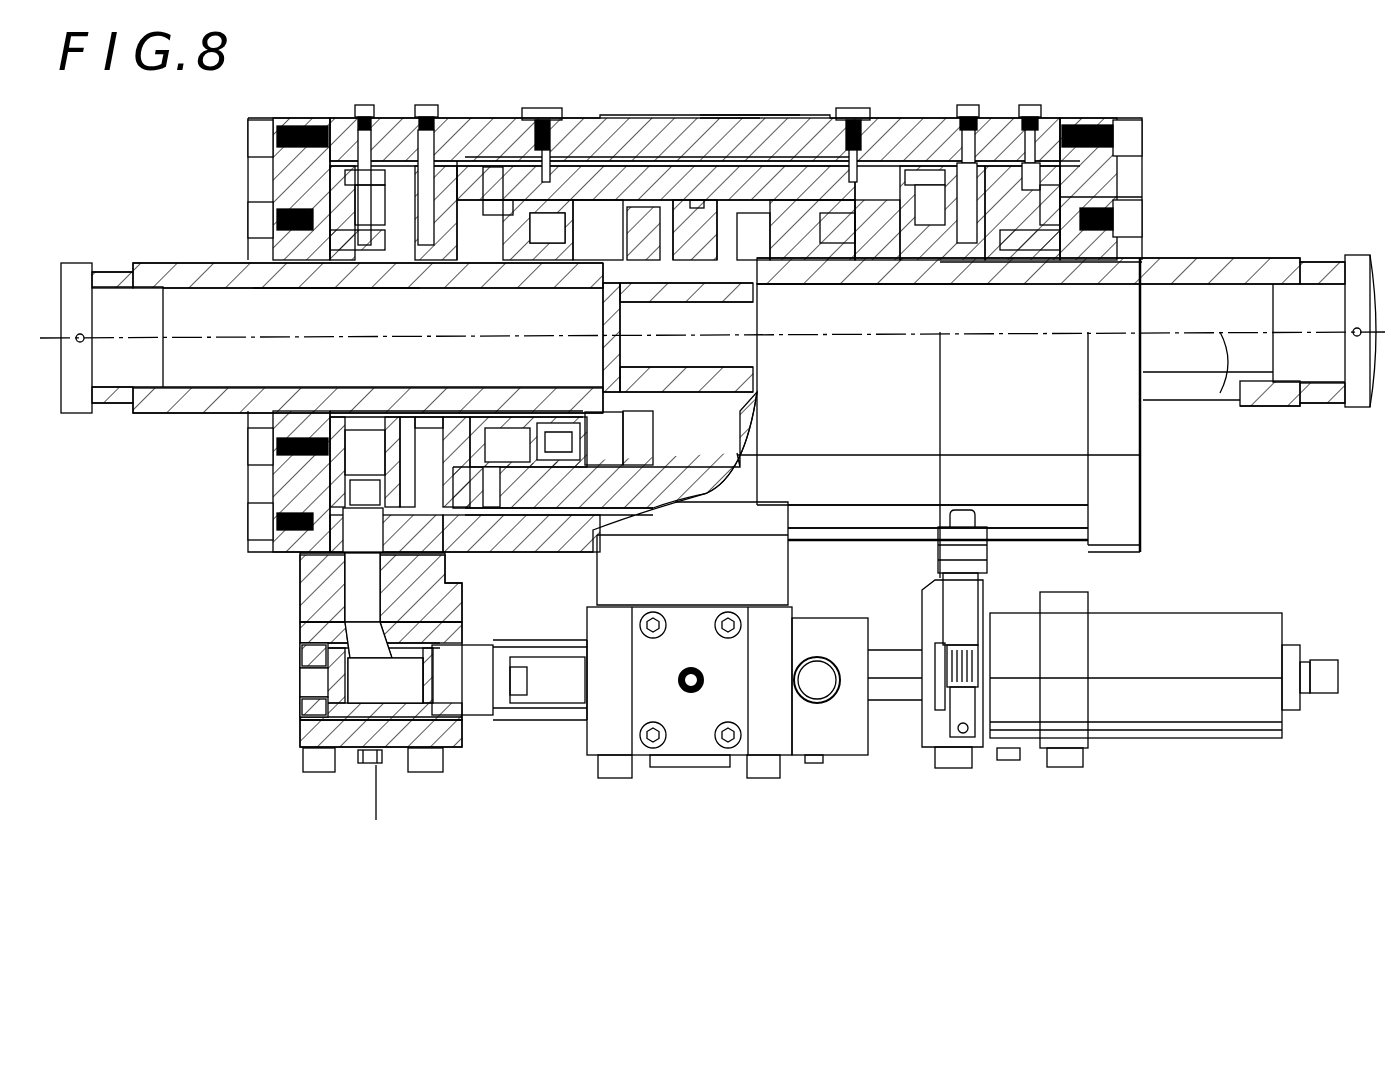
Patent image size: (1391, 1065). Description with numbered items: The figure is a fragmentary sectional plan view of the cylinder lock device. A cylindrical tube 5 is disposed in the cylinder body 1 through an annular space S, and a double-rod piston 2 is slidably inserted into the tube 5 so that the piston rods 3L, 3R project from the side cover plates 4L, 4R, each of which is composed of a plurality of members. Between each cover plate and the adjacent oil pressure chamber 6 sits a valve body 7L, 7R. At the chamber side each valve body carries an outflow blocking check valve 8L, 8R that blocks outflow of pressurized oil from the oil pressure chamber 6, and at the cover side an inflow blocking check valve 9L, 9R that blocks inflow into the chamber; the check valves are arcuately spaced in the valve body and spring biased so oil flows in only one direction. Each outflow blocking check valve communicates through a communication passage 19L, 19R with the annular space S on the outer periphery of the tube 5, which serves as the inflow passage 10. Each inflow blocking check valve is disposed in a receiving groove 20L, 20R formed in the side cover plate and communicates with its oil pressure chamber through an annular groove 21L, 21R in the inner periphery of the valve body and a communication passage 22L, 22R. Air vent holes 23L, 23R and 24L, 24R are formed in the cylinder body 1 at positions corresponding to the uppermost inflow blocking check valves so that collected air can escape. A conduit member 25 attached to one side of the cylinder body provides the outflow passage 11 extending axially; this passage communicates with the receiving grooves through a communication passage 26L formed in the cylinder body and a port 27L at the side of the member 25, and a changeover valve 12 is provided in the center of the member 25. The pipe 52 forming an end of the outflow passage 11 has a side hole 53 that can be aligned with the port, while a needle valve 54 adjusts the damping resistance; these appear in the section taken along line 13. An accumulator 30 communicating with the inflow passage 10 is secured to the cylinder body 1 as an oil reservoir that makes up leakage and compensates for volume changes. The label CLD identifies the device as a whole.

The cylinder body 1 is at (735, 128).
The piston 2 is at (760, 165).
The piston rod 3L is at (168, 280).
The piston rod 3R is at (1203, 392).
The side cover plate 4L is at (265, 180).
The side cover plate 4R is at (1140, 485).
The cylindrical tube 5 is at (632, 175).
The oil pressure chamber 6 is at (603, 160).
The valve body 7L is at (468, 150).
The valve body 7R is at (918, 165).
The outflow blocking check valve 8L is at (583, 165).
The outflow blocking check valve 8R is at (840, 160).
The inflow blocking check valve 9L is at (382, 105).
The inflow blocking check valve 9R is at (985, 165).
The inflow passage 10 is at (645, 175).
The outflow passage 11 is at (480, 692).
The changeover valve 12 is at (688, 722).
The section line 13— 13 is at (356, 574).
The communication passage 19L is at (548, 175).
The communication passage 19R is at (880, 165).
The receiving groove 20L is at (348, 172).
The receiving groove 20R is at (1053, 203).
The annular groove 21L is at (500, 160).
The annular groove 21R is at (940, 262).
The communication passage 22L is at (395, 263).
The communication passage 22R is at (903, 262).
The air vent hole 23L is at (405, 145).
The air vent hole 23R is at (945, 125).
The air vent hole 24L is at (360, 107).
The air vent hole 24R is at (1075, 120).
The conduit member 25 is at (432, 772).
The communication passage 26L is at (412, 560).
The port 27L is at (335, 600).
The accumulator 30 is at (1178, 722).
The pipe 52 is at (305, 692).
The hole 53 is at (305, 665).
The needle valve 54 is at (378, 765).
The annular space S is at (722, 112).
The clamping device CLD is at (744, 70).